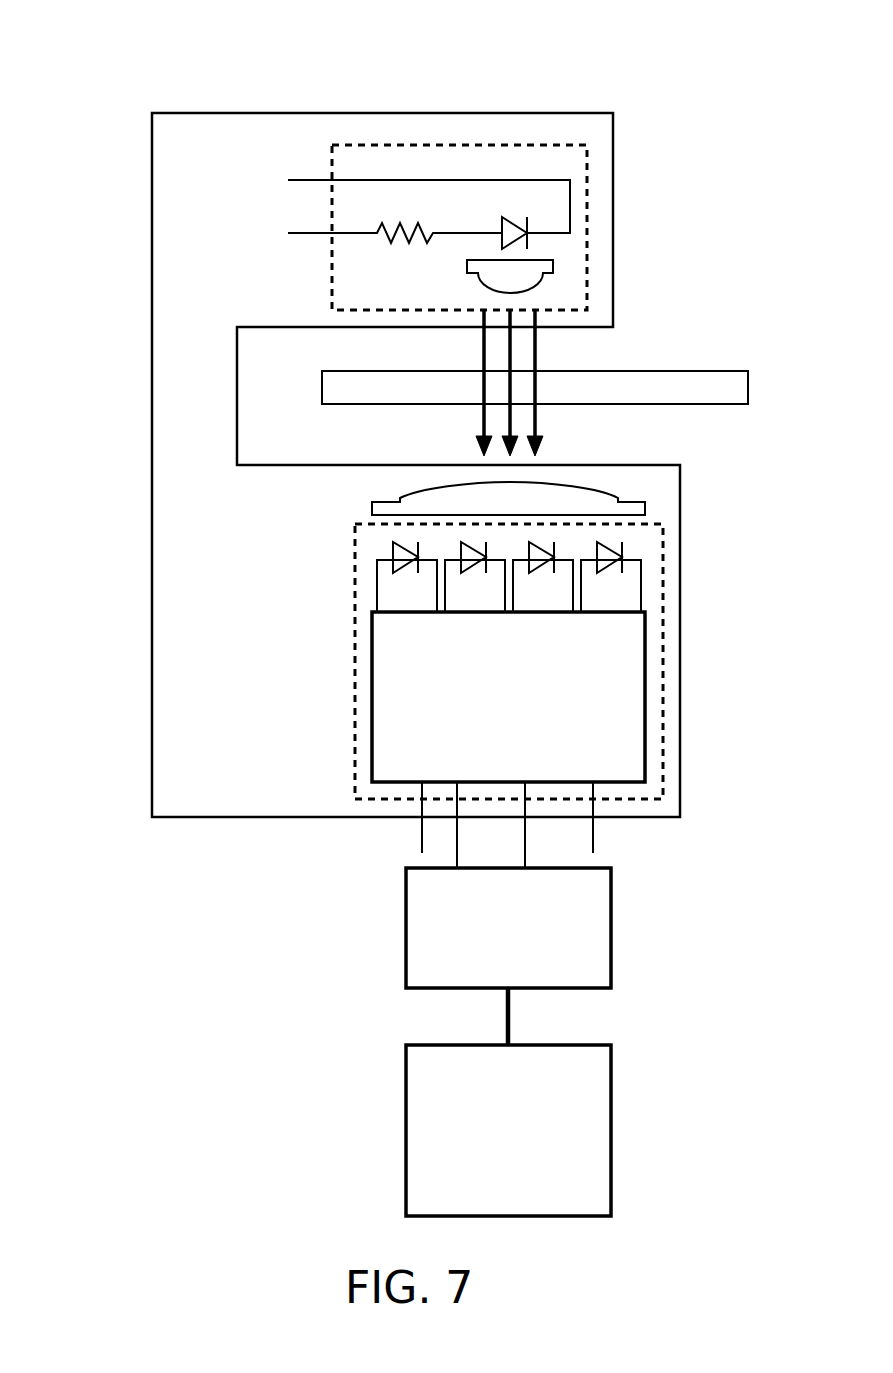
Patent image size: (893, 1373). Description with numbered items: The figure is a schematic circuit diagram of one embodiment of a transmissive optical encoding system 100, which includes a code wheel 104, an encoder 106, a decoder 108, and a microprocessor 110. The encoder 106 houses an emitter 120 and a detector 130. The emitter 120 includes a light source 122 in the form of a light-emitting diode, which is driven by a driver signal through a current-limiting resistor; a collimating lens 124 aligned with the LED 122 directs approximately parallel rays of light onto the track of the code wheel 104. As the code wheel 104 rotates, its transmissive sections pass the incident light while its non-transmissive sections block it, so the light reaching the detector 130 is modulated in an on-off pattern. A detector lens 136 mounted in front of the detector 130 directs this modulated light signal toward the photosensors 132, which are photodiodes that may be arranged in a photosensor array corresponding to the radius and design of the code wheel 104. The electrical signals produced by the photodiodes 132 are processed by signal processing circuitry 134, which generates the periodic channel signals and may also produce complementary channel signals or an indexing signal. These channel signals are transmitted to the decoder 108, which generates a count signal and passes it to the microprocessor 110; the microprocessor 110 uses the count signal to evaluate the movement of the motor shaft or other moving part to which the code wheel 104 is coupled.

The transmissive optical encoding system 100 is at (153, 63).
The code wheel 104 is at (690, 371).
The encoder 106 is at (151, 490).
The decoder 108 is at (405, 945).
The microprocessor 110 is at (405, 1143).
The emitter 120 is at (454, 227).
The light source 122 is at (510, 222).
The collimating lens 124 is at (532, 273).
The detector 130 is at (552, 661).
The photosensors 132 is at (607, 584).
The signal processing circuitry 134 is at (645, 740).
The detector lens 136 is at (575, 495).